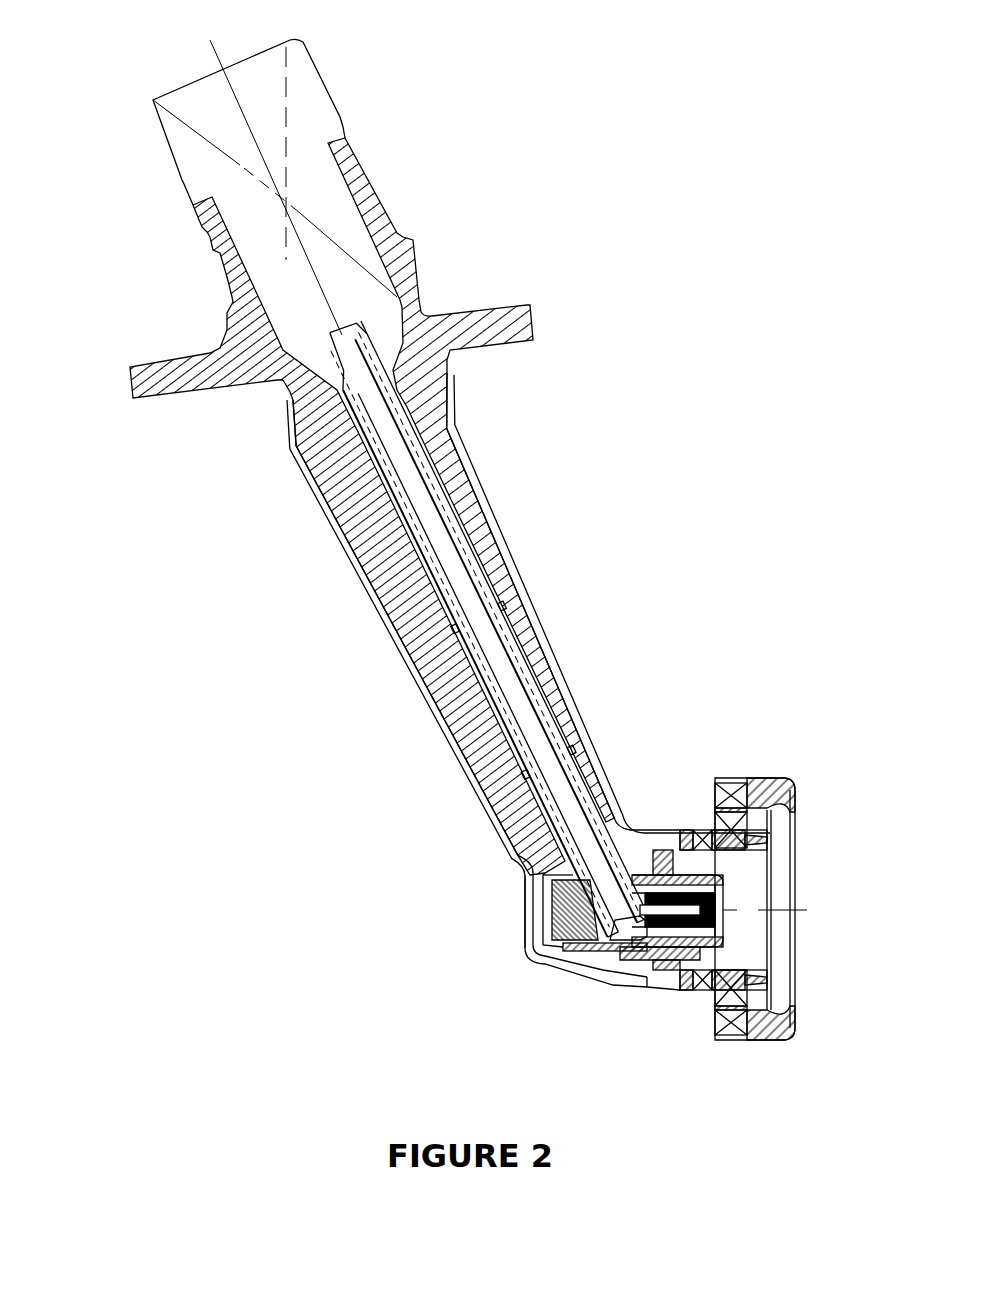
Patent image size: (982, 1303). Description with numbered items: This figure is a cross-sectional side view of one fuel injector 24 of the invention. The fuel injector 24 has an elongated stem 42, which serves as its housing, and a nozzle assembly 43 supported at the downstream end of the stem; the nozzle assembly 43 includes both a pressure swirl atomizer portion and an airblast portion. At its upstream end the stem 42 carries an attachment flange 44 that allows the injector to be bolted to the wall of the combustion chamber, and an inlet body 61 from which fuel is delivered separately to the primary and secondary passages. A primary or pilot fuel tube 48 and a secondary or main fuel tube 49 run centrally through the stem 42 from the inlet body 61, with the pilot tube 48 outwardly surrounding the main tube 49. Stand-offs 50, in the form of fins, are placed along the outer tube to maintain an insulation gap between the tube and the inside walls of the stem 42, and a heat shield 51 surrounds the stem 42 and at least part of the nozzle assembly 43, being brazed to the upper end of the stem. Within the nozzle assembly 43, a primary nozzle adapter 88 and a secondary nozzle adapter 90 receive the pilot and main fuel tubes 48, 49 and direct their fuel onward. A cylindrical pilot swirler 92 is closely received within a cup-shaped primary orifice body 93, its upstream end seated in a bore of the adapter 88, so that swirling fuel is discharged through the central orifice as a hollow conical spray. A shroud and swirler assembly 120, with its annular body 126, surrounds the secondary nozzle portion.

The fuel injector 24 is at (494, 196).
The stem 42 is at (366, 519).
The nozzle assembly 43 is at (802, 774).
The upstream attachment flange 44 is at (158, 385).
The primary/pilot fuel tube 48 is at (508, 640).
The secondary/main fuel tube 49 is at (543, 730).
The stand-offs 50 is at (453, 630).
The heat shield 51 is at (453, 747).
The inlet body 61 is at (200, 156).
The primary nozzle adapter 88 is at (568, 933).
The secondary nozzle adapter 90 is at (555, 938).
The pilot swirler 92 is at (642, 927).
The primary orifice body 93 is at (690, 927).
The shroud and swirler assembly 120 is at (710, 798).
The annular body 126 is at (703, 947).